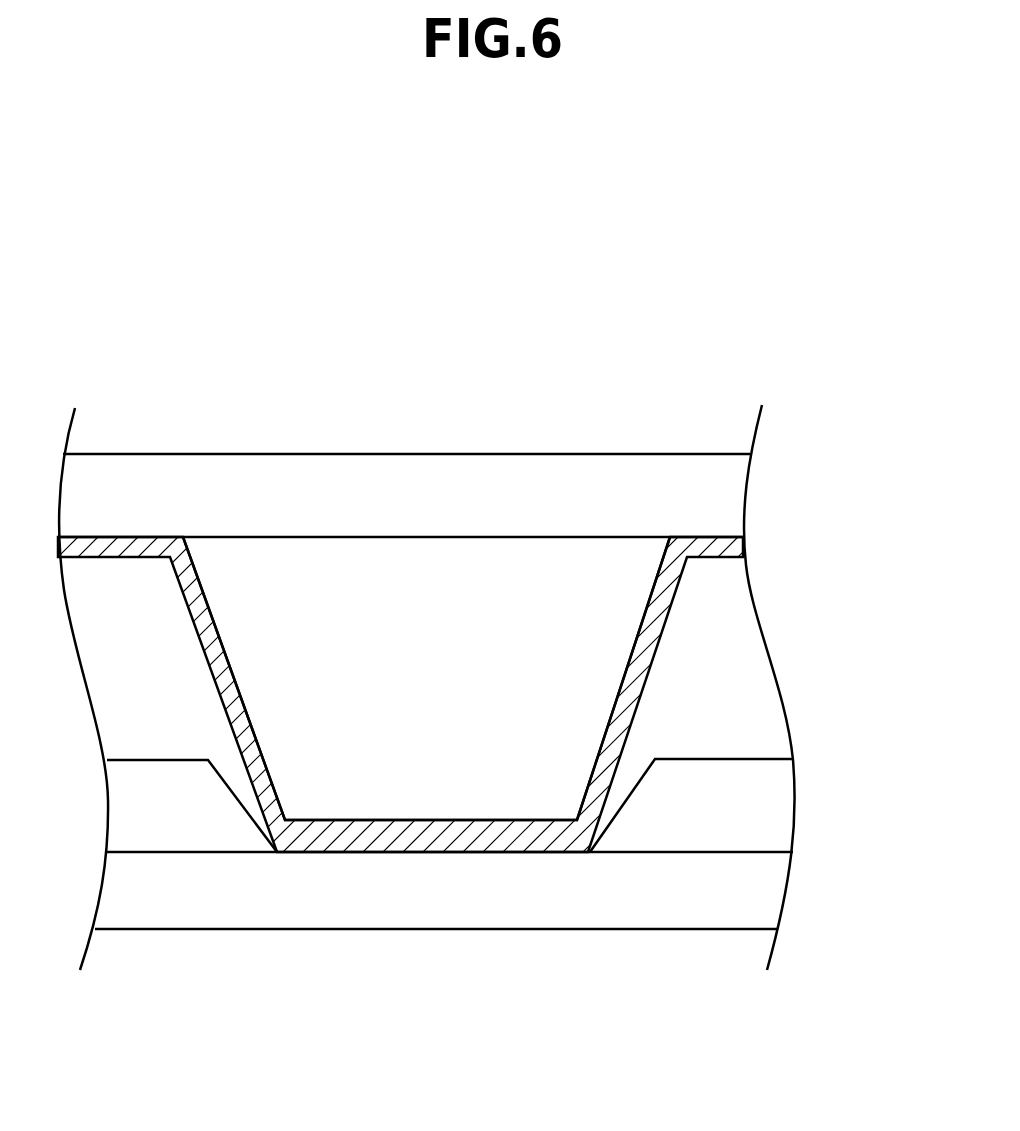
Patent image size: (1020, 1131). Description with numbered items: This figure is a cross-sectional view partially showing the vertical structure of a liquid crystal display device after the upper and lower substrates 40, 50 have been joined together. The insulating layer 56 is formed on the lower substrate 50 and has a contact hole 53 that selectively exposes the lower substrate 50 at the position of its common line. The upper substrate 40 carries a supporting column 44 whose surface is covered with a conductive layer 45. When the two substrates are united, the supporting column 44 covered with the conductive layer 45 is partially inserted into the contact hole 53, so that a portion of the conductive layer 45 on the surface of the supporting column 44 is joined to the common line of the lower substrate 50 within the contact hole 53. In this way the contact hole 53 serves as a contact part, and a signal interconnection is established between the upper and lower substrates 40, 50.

The upper substrate 40 is at (553, 472).
The supporting column 44 is at (440, 707).
The conductive layer 45 is at (653, 628).
The lower substrate 50 is at (546, 908).
The contact hole 53 is at (637, 778).
The insulating layer 56 is at (783, 810).